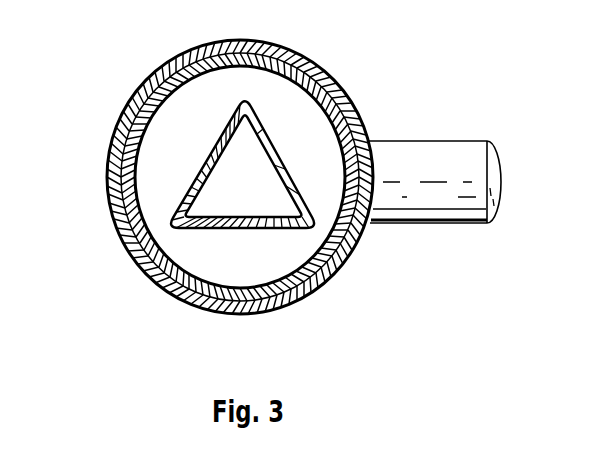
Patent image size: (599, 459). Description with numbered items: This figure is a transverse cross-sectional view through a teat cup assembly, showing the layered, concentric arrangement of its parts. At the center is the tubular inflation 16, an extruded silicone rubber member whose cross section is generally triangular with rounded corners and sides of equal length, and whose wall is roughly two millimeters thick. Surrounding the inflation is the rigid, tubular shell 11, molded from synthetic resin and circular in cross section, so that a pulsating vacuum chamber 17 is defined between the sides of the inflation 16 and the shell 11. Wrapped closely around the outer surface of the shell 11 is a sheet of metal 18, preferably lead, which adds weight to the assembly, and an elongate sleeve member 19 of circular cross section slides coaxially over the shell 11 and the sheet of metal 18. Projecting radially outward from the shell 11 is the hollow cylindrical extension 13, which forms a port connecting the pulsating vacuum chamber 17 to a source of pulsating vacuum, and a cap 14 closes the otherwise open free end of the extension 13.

The shell 11 is at (132, 212).
The cylindrical extension 13 is at (428, 152).
The cap 14 is at (494, 182).
The inflation 16 is at (212, 152).
The pulsating vacuum chamber 17 is at (343, 92).
The sheet of metal 18 is at (157, 73).
The elongate sleeve member 19 is at (300, 53).